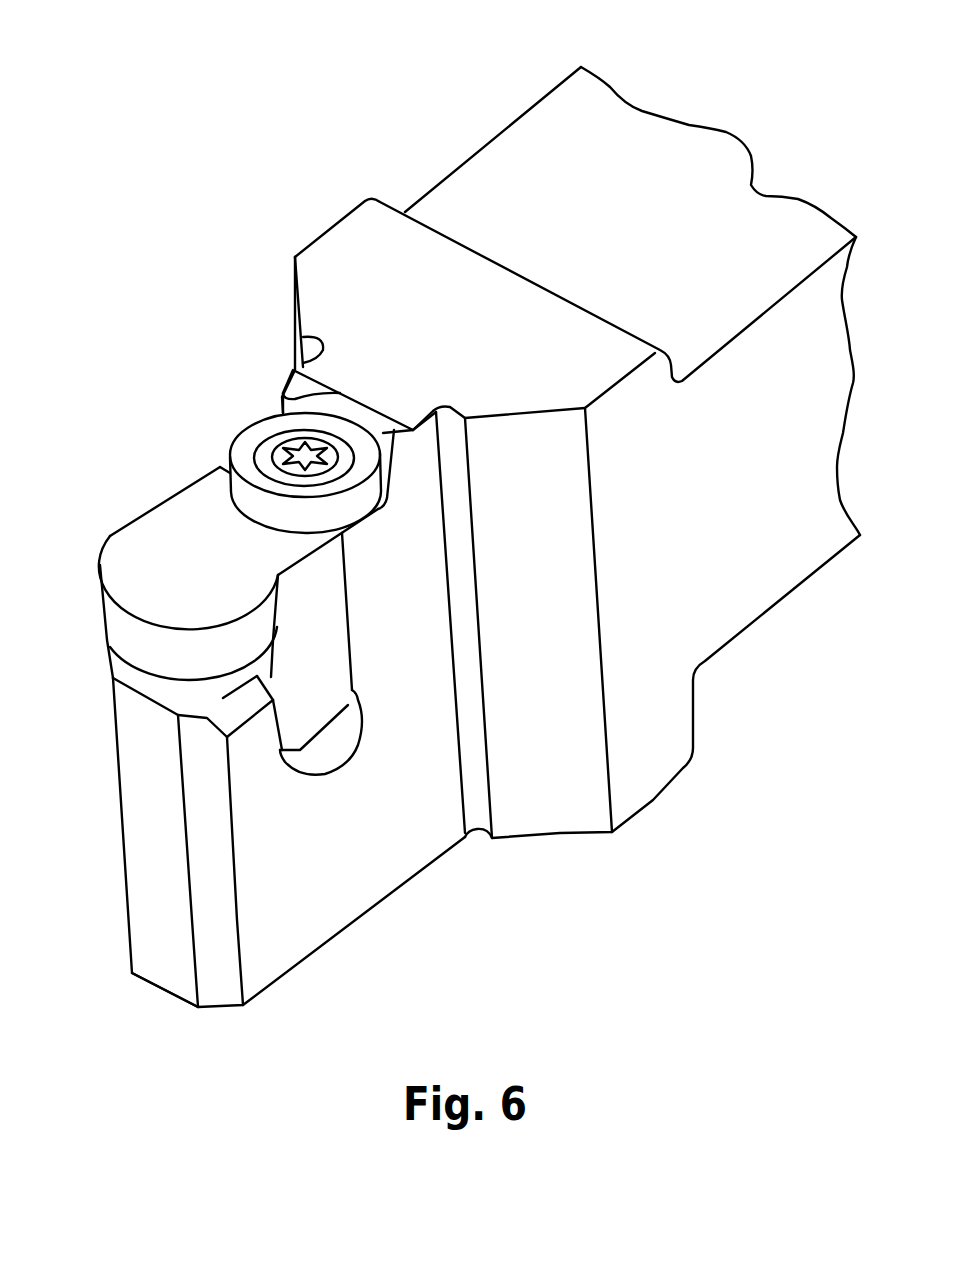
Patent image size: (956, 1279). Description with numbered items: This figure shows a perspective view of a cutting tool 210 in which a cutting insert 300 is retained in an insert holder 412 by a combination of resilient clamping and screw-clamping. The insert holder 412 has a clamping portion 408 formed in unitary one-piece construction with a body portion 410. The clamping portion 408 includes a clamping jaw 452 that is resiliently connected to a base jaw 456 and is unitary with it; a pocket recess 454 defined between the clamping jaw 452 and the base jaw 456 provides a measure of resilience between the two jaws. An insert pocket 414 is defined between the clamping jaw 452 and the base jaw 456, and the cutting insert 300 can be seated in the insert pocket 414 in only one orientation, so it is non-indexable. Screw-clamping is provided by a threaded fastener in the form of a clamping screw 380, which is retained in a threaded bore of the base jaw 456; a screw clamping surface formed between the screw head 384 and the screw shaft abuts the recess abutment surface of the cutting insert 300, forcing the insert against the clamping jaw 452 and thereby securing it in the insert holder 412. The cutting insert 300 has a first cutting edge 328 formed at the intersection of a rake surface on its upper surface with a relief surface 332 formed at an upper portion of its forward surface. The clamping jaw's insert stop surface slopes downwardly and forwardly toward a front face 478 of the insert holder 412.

The cutting tool 210 is at (117, 283).
The cutting insert 300 is at (312, 679).
The first cutting edge 328 is at (128, 620).
The relief surface 332 is at (137, 652).
The clamping screw 380 is at (252, 443).
The screw head 384 is at (253, 417).
The clamping portion 408 is at (392, 913).
The body portion 410 is at (665, 812).
The insert holder 412 is at (393, 817).
The insert pocket 414 is at (325, 737).
The clamping jaw 452 is at (155, 841).
The pocket recess 454 is at (328, 753).
The base jaw 456 is at (378, 585).
The front face 478 is at (157, 757).